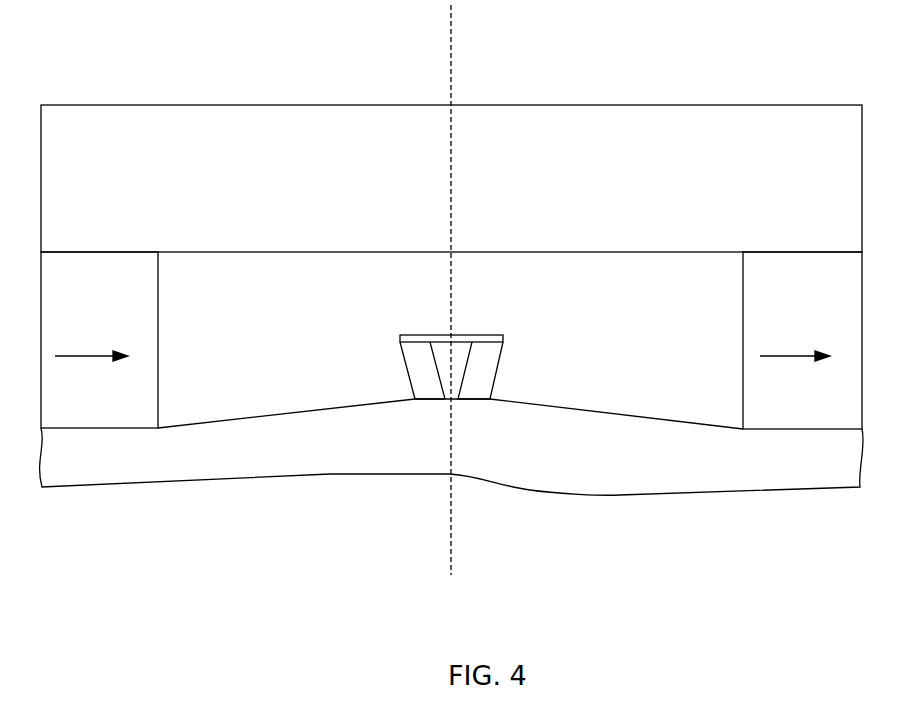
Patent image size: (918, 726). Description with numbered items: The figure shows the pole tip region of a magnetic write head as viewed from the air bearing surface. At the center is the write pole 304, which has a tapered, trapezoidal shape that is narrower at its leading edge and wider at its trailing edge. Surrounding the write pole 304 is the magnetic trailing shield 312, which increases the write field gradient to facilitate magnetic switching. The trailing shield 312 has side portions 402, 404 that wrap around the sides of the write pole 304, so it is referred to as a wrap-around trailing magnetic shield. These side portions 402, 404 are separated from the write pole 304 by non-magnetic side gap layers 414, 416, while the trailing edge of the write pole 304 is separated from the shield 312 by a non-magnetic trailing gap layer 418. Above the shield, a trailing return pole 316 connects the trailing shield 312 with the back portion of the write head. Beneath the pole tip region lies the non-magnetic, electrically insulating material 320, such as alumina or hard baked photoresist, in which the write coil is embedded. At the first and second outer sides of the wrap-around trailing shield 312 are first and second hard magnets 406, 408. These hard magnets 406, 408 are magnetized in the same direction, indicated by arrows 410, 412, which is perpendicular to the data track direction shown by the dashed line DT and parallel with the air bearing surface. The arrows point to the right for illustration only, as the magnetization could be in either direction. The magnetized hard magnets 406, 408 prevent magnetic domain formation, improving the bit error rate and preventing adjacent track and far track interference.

The data track direction line DT is at (452, 33).
The trailing return pole 316 is at (383, 180).
The trailing shield 312 is at (454, 340).
The non-magnetic trailing gap layer 418 is at (486, 335).
The write pole 304 is at (465, 355).
The non-magnetic side gap layer 414 is at (483, 370).
The non-magnetic side gap layer 416 is at (418, 368).
The non-magnetic electrically insulating material 320 is at (583, 447).
The side portion of trailing shield 404 is at (256, 363).
The side portion of trailing shield 402 is at (696, 366).
The second hard magnet 408 is at (119, 287).
The first hard magnet 406 is at (819, 298).
The magnetization arrow 412 is at (103, 355).
The magnetization arrow 410 is at (812, 355).